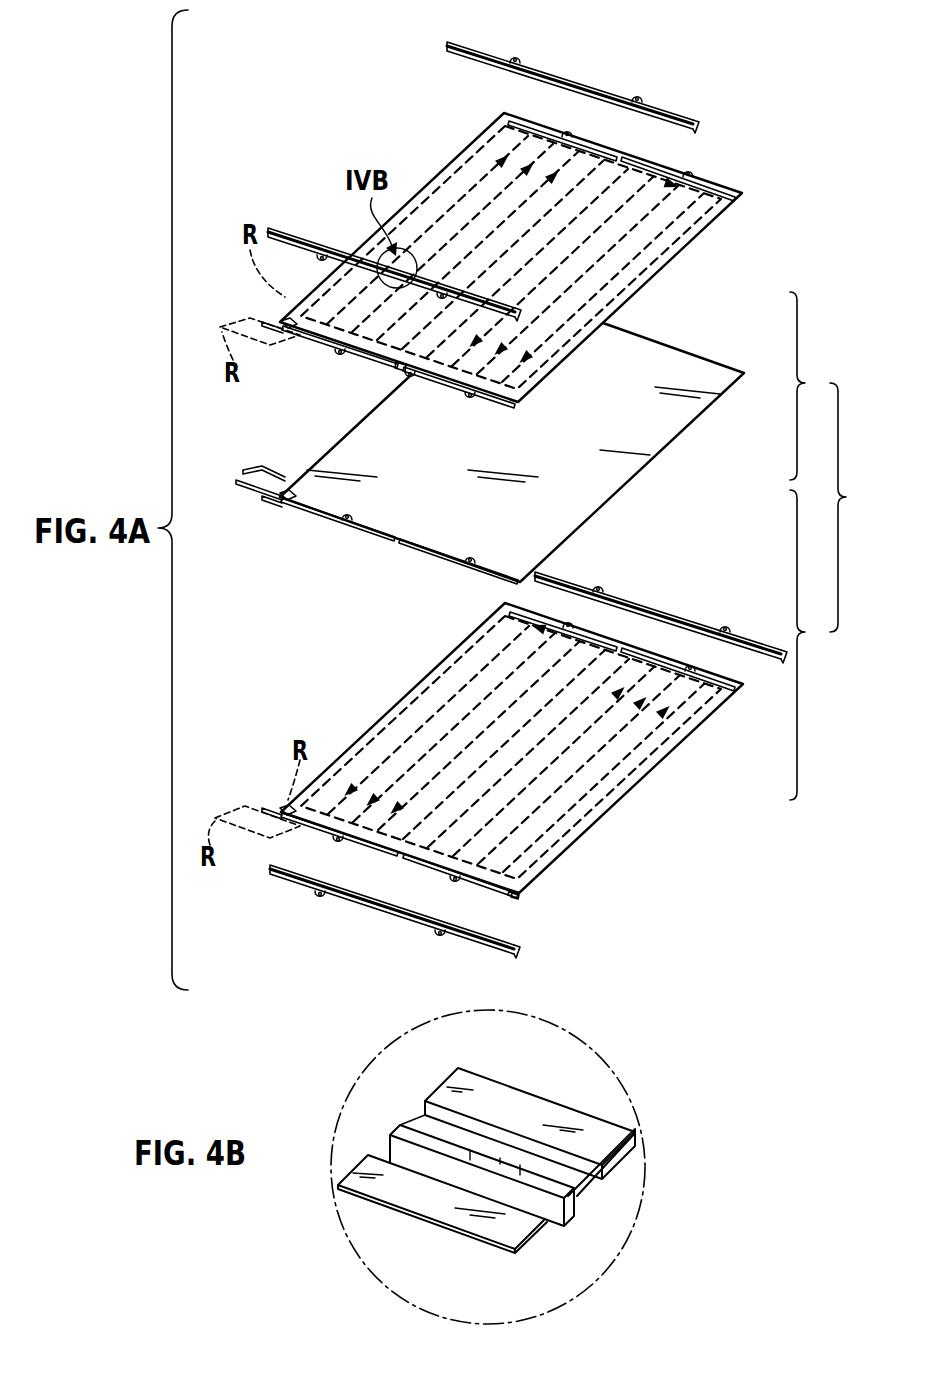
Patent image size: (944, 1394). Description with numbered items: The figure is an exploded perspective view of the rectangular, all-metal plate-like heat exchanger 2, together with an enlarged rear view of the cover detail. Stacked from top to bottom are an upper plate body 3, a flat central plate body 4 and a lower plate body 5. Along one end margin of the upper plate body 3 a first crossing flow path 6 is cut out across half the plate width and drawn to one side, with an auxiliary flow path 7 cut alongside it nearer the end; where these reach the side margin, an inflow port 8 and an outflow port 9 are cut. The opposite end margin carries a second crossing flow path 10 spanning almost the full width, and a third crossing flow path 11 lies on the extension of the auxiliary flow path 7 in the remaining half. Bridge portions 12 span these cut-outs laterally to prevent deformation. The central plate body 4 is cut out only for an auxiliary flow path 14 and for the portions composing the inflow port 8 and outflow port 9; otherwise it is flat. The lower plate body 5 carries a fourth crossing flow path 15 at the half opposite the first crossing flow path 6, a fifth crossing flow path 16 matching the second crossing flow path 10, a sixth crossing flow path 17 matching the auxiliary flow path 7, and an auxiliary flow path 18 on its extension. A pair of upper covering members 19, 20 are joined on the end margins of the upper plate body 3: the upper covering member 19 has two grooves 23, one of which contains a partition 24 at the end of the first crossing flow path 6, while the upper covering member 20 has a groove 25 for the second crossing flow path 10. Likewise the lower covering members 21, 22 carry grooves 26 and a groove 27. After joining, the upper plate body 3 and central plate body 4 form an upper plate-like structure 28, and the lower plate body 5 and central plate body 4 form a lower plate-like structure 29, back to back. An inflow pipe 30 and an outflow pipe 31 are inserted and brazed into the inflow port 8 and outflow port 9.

In FIG. 4A, the plate-like heat exchanger 2 is at (848, 507).
In FIG. 4A, the upper plate body 3 is at (653, 268).
In FIG. 4A, the central plate body 4 is at (668, 437).
In FIG. 4A, the lower plate body 5 is at (672, 742).
In FIG. 4A, the first crossing flow path 6 is at (340, 348).
In FIG. 4A, the auxiliary flow path 7 is at (300, 334).
In FIG. 4A, the inflow port 8 is at (287, 318).
In FIG. 4A, the outflow port 9 is at (270, 324).
In FIG. 4A, the second crossing flow path 10 is at (600, 152).
In FIG. 4A, the third crossing flow path 11 is at (433, 378).
In FIG. 4A, the bridge portions 12 is at (695, 174).
In FIG. 4A, the auxiliary flow path 14 is at (420, 550).
In FIG. 4A, the fourth crossing flow path 15 is at (518, 890).
In FIG. 4A, the fifth crossing flow path 16 is at (614, 645).
In FIG. 4A, the sixth crossing flow path 17 is at (378, 846).
In FIG. 4A, the auxiliary flow path 18 is at (518, 897).
In FIG. 4A, the upper covering member 19 is at (300, 236).
In FIG. 4B, the upper covering member 19 is at (445, 1203).
In FIG. 4A, the upper covering member 20 is at (592, 86).
In FIG. 4A, the lower covering member 21 is at (418, 924).
In FIG. 4A, the lower covering member 22 is at (712, 627).
In FIG. 4B, the grooves 23 is at (388, 1150).
In FIG. 4B, the partition 24 is at (516, 1153).
In FIG. 4A, the groove 25 is at (552, 70).
In FIG. 4A, the grooves 26 is at (380, 895).
In FIG. 4A, the groove 27 is at (632, 603).
In FIG. 4A, the upper plate-like structure 28 is at (810, 386).
In FIG. 4A, the lower plate-like structure 29 is at (810, 645).
In FIG. 4A, the inflow pipe 30 is at (252, 468).
In FIG. 4A, the outflow pipe 31 is at (243, 484).